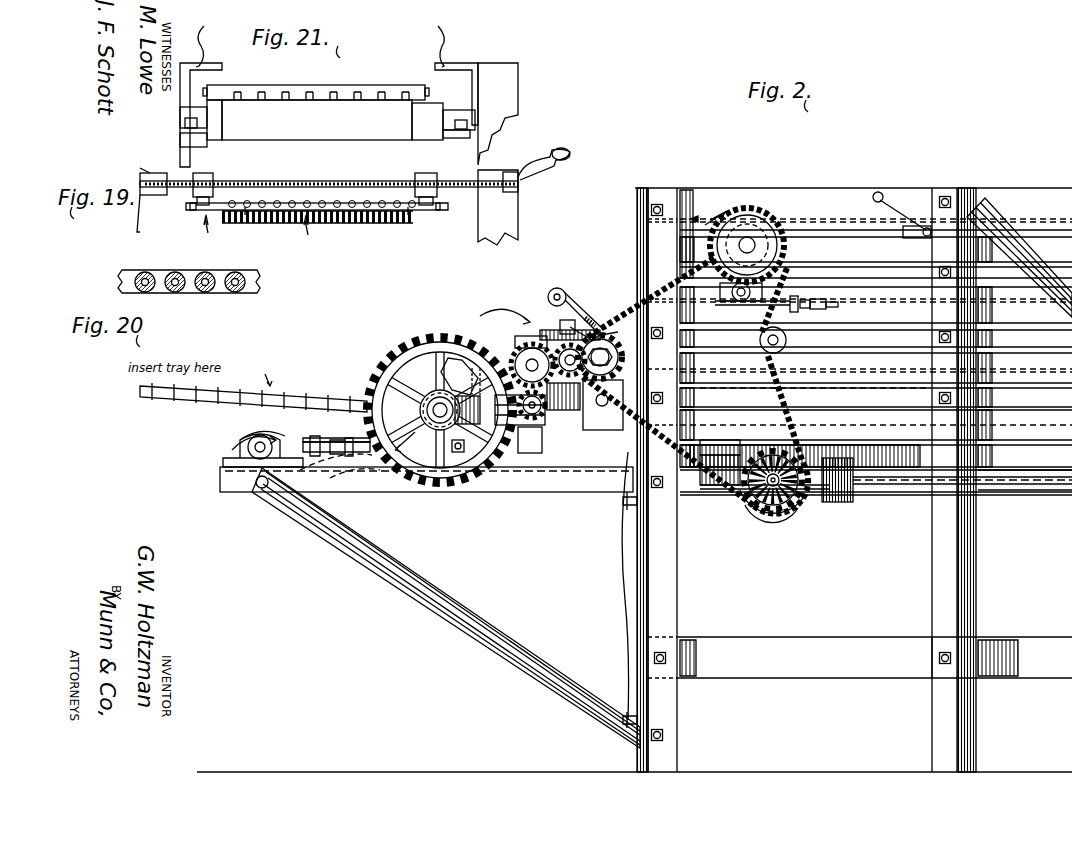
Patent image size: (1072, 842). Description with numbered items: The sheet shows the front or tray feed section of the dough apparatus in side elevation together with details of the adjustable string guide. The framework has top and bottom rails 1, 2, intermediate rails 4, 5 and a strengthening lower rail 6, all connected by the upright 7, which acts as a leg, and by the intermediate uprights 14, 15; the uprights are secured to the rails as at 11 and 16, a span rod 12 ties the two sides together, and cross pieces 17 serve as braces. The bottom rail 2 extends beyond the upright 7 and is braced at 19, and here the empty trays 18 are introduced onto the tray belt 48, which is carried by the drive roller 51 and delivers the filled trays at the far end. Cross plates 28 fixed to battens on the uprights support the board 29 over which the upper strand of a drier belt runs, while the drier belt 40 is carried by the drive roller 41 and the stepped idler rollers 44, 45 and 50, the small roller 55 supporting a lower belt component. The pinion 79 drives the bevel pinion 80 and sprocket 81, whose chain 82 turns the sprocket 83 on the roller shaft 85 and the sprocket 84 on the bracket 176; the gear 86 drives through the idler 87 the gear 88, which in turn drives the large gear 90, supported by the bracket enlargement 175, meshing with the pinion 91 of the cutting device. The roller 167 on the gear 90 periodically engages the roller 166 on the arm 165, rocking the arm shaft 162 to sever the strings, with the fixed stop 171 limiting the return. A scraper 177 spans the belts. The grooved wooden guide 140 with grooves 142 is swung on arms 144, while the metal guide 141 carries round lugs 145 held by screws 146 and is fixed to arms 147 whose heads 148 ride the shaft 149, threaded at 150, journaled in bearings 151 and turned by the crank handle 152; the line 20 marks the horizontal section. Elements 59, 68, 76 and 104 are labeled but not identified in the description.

In FIG. 21, the top rail 1 is at (184, 62).
In FIG. 2, the top rail 1 is at (763, 195).
In FIG. 2, the bottom rail 2 is at (532, 485).
In FIG. 2, the intermediate rail 4 is at (843, 325).
In FIG. 2, the intermediate rail 5 is at (830, 270).
In FIG. 2, the lower rail 6 is at (851, 645).
In FIG. 2, the upright 7 is at (673, 620).
In FIG. 2, the securing means 11 is at (641, 200).
In FIG. 2, the span rod 12 is at (658, 205).
In FIG. 2, the upright 14 is at (932, 607).
In FIG. 2, the upright 15 is at (712, 400).
In FIG. 2, the securing means 16 is at (945, 198).
In FIG. 21, the cross piece 17 is at (500, 60).
In FIG. 2, the cross piece 17 is at (1010, 215).
In FIG. 2, the tray 18 is at (190, 402).
In FIG. 2, the bracing 19 is at (480, 615).
In FIG. 19, the section line 20— 20 is at (266, 229).
In FIG. 2, the cross plate 28 is at (985, 215).
In FIG. 2, the board 29 is at (900, 232).
In FIG. 2, the drier belt 40 is at (908, 385).
In FIG. 2, the drive roller 41 is at (785, 215).
In FIG. 2, the idler roller 44 is at (830, 240).
In FIG. 2, the roller 45 is at (507, 352).
In FIG. 2, the tray belt 48 is at (900, 490).
In FIG. 2, the idler roller 50 is at (890, 290).
In FIG. 2, the drive roller 51 is at (836, 355).
In FIG. 2, the small roller 55 is at (738, 495).
In FIG. 2, the bolt 59 is at (826, 318).
In FIG. 2, the rail 68 is at (815, 222).
In FIG. 2, the shaft 76 is at (1010, 490).
In FIG. 2, the pinion 79 is at (800, 515).
In FIG. 2, the bevel pinion 80 is at (770, 515).
In FIG. 2, the sprocket 81 is at (745, 500).
In FIG. 2, the chain 82 is at (722, 485).
In FIG. 2, the sprocket 83 is at (730, 212).
In FIG. 2, the sprocket 84 is at (745, 345).
In FIG. 2, the shaft 85 is at (749, 238).
In FIG. 2, the gear 86 is at (583, 340).
In FIG. 2, the idler 87 is at (565, 345).
In FIG. 2, the gear 88 is at (534, 325).
In FIG. 2, the large gear 90 is at (400, 345).
In FIG. 2, the pinion 91 is at (545, 450).
In FIG. 2, the idler sprocket 104 is at (795, 356).
In FIG. 21, the guide 140 is at (372, 85).
In FIG. 2, the guide 140 is at (878, 190).
In FIG. 19, the guide 141 is at (370, 181).
In FIG. 20, the guide 141 is at (200, 294).
In FIG. 2, the guide 141 is at (470, 340).
In FIG. 21, the groove 142 is at (296, 85).
In FIG. 21, the arm 144 is at (322, 37).
In FIG. 2, the arm 144 is at (905, 228).
In FIG. 19, the lug 145 is at (294, 222).
In FIG. 20, the lug 145 is at (236, 272).
In FIG. 19, the screw 146 is at (282, 203).
In FIG. 20, the screw 146 is at (173, 271).
In FIG. 19, the arm 147 is at (196, 205).
In FIG. 19, the enlarged head 148 is at (427, 173).
In FIG. 19, the shaft 149 is at (244, 181).
In FIG. 19, the threaded end 150 is at (192, 172).
In FIG. 19, the bearing 151 is at (512, 175).
In FIG. 2, the bearing 151 is at (580, 320).
In FIG. 19, the crank handle 152 is at (566, 150).
In FIG. 2, the crank handle 152 is at (558, 288).
In FIG. 2, the arm shaft 162 is at (515, 430).
In FIG. 2, the arm 165 is at (444, 424).
In FIG. 2, the roller 166 is at (440, 388).
In FIG. 2, the roller 167 is at (440, 465).
In FIG. 2, the fixed stop 171 is at (445, 360).
In FIG. 2, the enlargement 175 is at (380, 480).
In FIG. 2, the bracket 176 is at (600, 432).
In FIG. 2, the scraper 177 is at (905, 290).